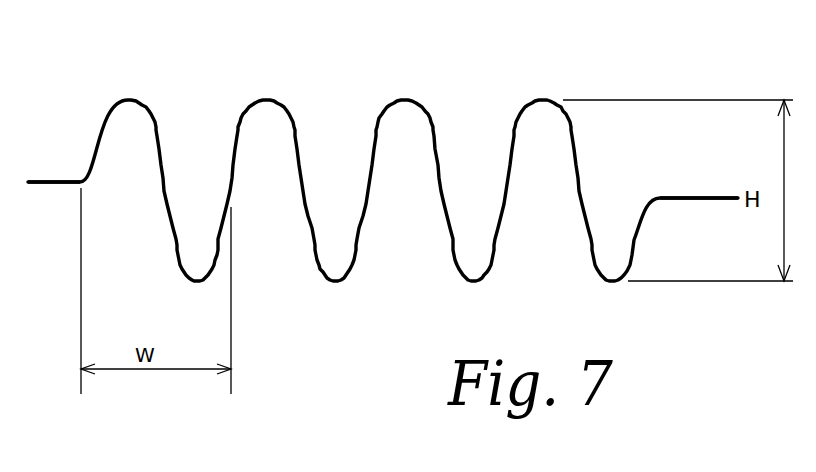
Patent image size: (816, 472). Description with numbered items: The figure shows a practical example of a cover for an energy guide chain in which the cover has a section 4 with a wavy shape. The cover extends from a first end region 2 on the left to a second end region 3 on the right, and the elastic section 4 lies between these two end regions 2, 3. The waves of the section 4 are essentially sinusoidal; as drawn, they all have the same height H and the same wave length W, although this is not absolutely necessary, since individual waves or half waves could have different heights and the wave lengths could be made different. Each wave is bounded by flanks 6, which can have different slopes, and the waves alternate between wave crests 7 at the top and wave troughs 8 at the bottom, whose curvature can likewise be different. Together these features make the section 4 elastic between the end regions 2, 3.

The first end region 2 is at (57, 146).
The second end region 3 is at (681, 191).
The section 4 is at (320, 323).
The flanks 6 is at (578, 200).
The wave crests 7 is at (128, 100).
The wave troughs 8 is at (195, 279).